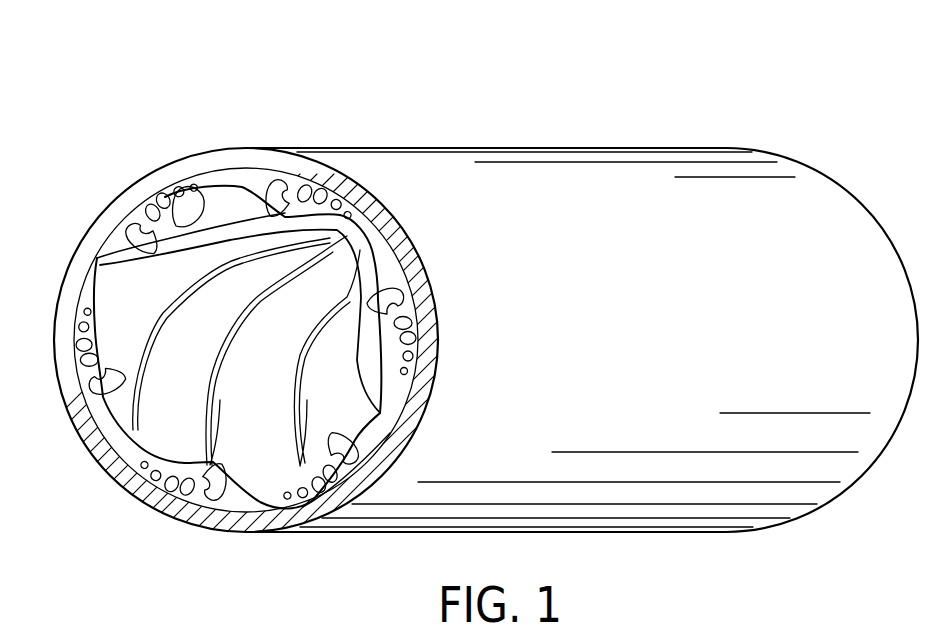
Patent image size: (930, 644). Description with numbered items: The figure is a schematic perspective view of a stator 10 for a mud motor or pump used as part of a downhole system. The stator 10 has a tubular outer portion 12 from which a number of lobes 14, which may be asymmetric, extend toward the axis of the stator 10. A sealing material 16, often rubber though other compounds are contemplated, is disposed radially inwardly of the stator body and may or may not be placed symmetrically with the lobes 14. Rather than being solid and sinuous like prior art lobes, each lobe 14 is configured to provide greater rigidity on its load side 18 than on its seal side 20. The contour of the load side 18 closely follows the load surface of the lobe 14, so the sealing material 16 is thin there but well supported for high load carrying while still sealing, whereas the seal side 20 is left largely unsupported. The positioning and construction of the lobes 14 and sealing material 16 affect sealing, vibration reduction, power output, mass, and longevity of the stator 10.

The stator 10 is at (478, 126).
The tubular outer portion 12 is at (95, 243).
The lobes 14 is at (90, 310).
The sealing material 16 is at (250, 183).
The load side 18 is at (198, 192).
The seal side 20 is at (384, 302).